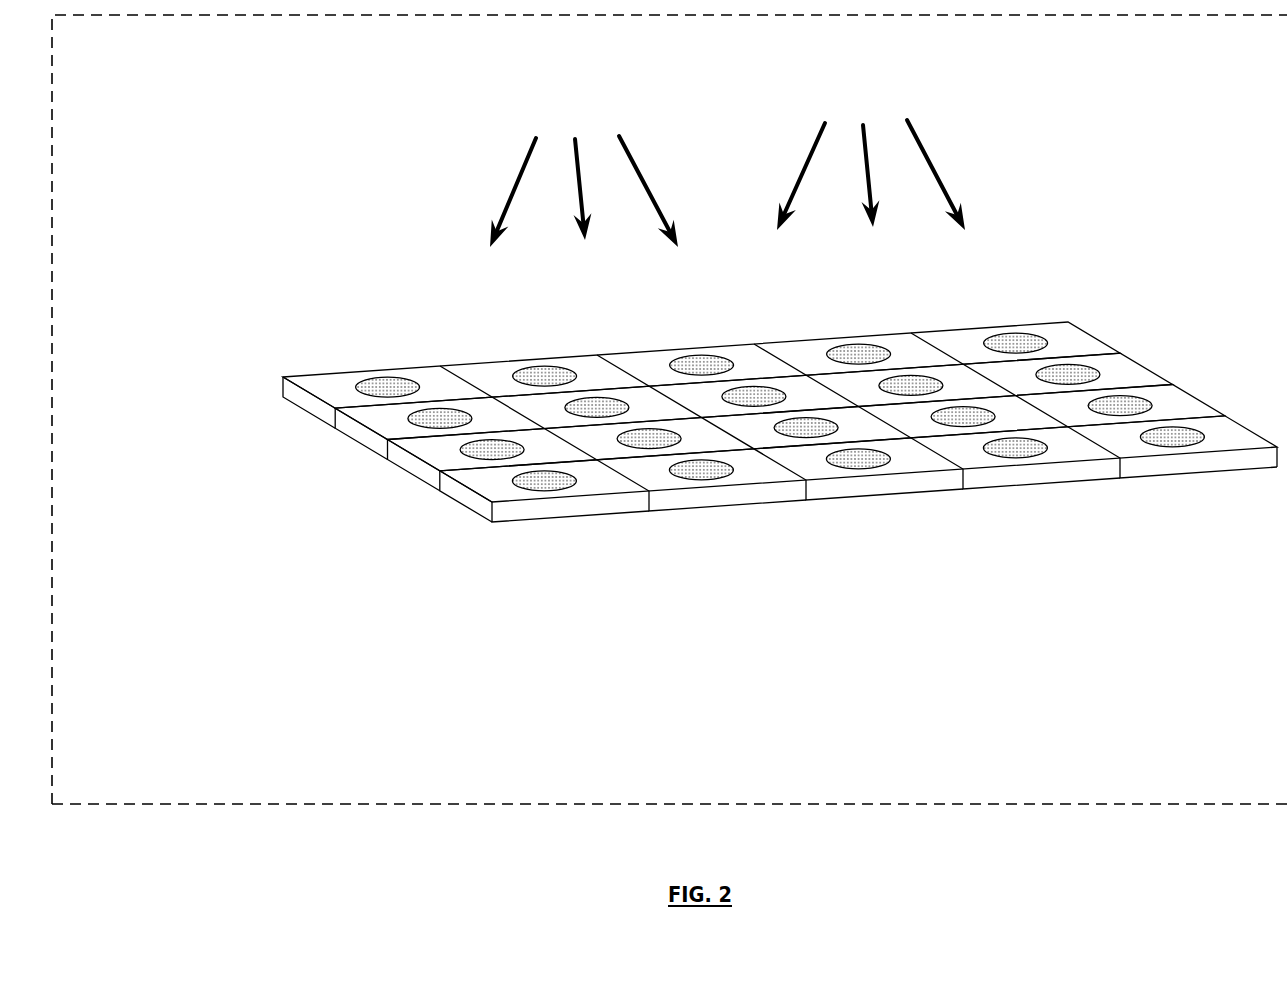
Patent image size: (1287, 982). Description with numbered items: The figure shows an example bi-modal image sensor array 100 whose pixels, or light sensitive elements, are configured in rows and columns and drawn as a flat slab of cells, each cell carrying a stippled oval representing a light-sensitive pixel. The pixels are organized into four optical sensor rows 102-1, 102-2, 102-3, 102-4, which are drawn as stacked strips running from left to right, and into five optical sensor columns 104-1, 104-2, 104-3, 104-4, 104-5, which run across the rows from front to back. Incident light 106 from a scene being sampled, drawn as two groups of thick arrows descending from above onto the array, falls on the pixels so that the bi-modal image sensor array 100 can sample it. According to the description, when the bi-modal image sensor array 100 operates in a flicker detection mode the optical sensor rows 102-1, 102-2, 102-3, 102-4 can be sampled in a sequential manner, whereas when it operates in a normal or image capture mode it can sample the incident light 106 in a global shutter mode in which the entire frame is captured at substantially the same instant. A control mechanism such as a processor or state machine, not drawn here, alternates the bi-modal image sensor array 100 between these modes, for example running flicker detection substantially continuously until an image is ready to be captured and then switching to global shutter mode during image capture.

The bi-modal image sensor array 100 is at (298, 792).
The optical sensor row 102-1 is at (312, 431).
The optical sensor row 102-2 is at (343, 457).
The optical sensor row 102-3 is at (398, 489).
The optical sensor row 102-4 is at (448, 514).
The optical sensor column 104-1 is at (1222, 620).
The optical sensor column 104-2 is at (754, 535).
The optical sensor column 104-3 is at (858, 520).
The optical sensor column 104-4 is at (993, 512).
The optical sensor column 104-5 is at (1135, 500).
The incident light 106 is at (447, 271).